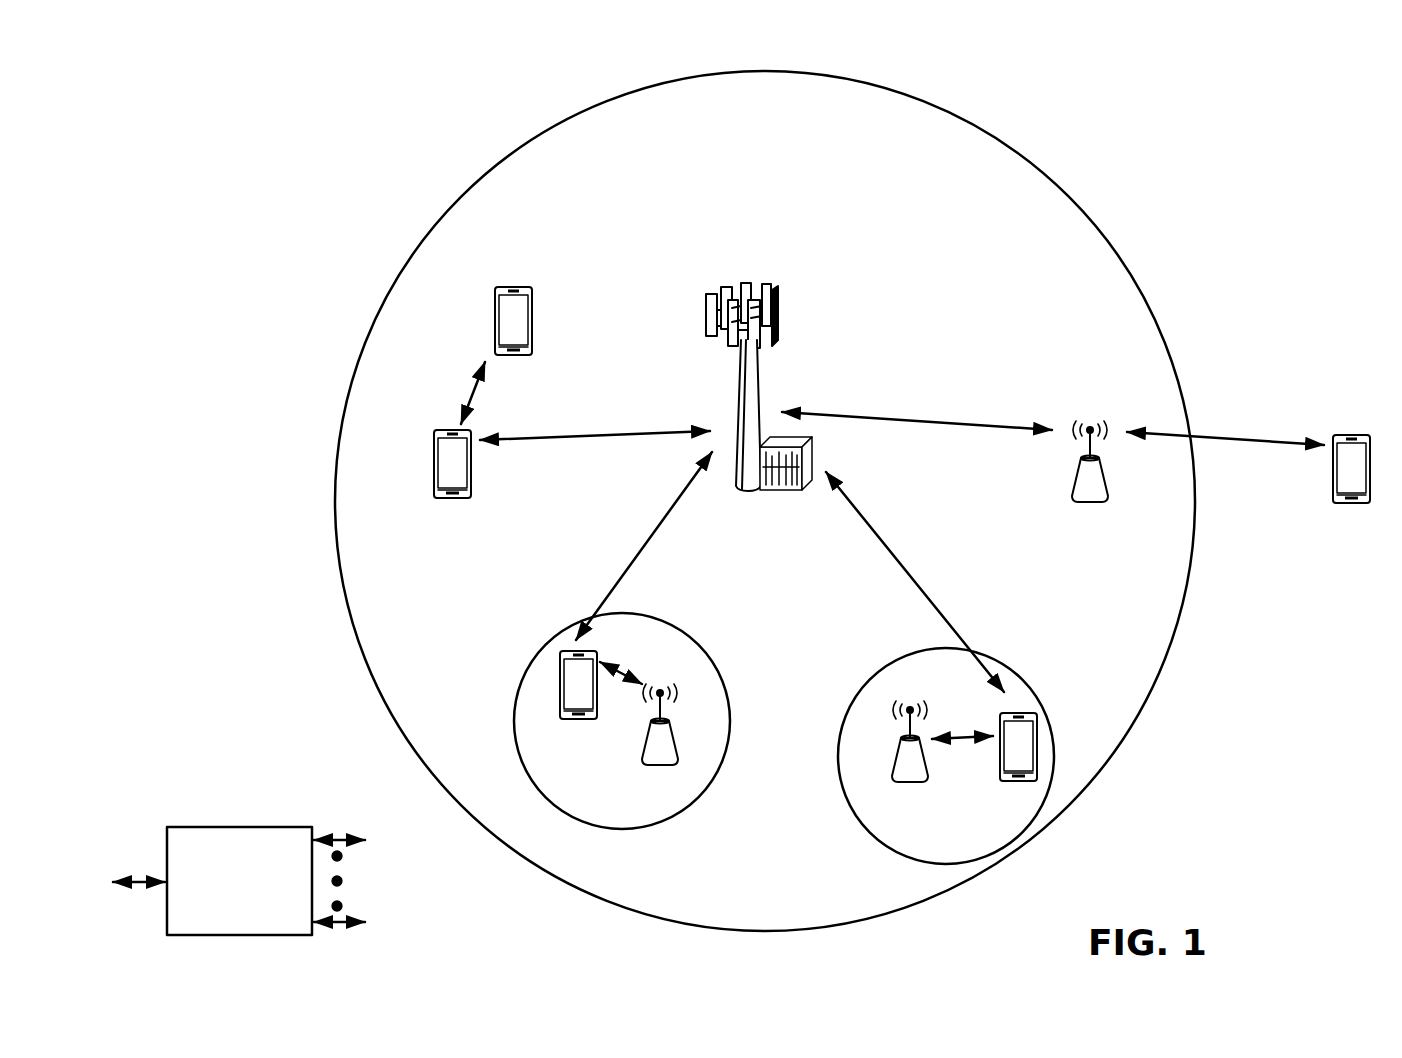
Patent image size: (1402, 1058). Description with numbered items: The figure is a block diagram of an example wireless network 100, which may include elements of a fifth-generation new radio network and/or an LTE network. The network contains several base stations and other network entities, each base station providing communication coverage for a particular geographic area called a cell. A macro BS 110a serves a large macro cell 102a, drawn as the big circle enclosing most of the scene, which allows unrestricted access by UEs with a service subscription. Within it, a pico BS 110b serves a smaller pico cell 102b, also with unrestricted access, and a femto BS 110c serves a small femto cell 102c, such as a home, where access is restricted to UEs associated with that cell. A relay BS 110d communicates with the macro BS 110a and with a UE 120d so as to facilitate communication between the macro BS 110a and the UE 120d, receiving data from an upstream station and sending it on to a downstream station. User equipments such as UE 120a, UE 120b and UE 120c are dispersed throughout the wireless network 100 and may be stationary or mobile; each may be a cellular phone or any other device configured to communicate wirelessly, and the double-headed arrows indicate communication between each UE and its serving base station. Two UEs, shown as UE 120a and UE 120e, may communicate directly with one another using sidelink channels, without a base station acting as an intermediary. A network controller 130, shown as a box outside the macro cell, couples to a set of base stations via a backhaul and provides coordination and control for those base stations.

The wireless network 100 is at (186, 67).
The macro cell 102a is at (1053, 180).
The pico cell 102b is at (716, 658).
The femto cell 102c is at (880, 660).
The macro BS 110a is at (753, 280).
The pico BS 110b is at (677, 750).
The femto BS 110c is at (893, 768).
The relay BS 110d is at (1091, 425).
The UE 120a is at (432, 460).
The UE 120b is at (563, 721).
The UE 120c is at (1003, 783).
The UE 120d is at (1362, 432).
The UE 120e is at (494, 311).
The network controller 130 is at (237, 826).